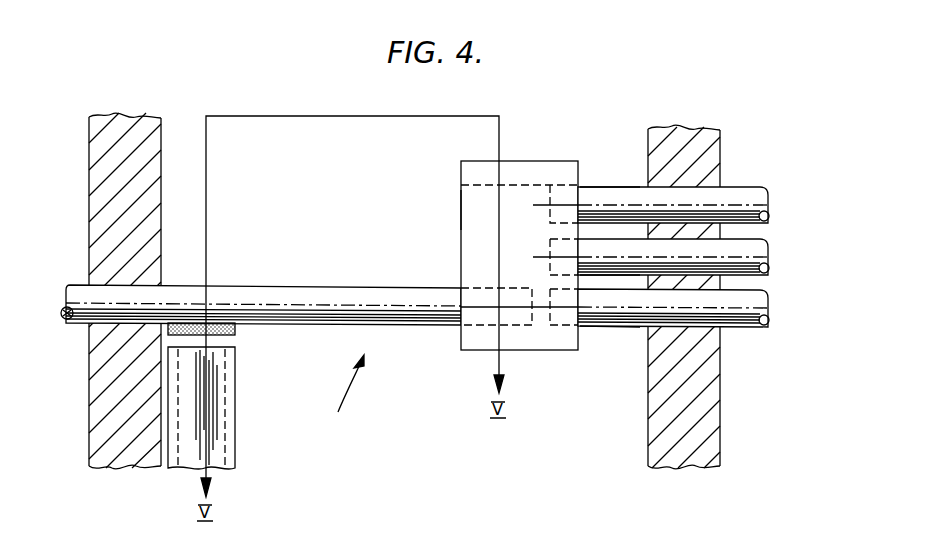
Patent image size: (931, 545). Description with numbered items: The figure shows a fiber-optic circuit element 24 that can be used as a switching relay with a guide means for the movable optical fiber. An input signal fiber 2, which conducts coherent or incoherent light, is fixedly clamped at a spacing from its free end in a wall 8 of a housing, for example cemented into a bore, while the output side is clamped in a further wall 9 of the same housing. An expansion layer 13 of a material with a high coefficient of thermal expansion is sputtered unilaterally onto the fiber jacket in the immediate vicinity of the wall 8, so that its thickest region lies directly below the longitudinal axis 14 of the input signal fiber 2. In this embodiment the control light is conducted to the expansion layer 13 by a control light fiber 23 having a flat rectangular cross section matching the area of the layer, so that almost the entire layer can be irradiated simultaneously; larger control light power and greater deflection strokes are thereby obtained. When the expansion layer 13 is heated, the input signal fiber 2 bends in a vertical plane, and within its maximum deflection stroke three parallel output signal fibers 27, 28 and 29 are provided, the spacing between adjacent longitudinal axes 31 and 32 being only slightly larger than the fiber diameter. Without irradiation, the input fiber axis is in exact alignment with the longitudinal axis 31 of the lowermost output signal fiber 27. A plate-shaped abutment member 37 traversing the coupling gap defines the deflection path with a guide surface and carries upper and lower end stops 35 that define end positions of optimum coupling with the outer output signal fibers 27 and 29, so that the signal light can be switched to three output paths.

The input signal fiber 2 is at (375, 290).
The wall 8 is at (150, 159).
The wall 9 is at (655, 140).
The expansion layer 13 is at (236, 333).
The longitudinal axis 14 is at (68, 301).
The control light fiber 23 is at (215, 413).
The circuit element 24 is at (344, 394).
The output signal fiber 27 is at (595, 318).
The output signal fiber 28 is at (605, 265).
The output signal fiber 29 is at (597, 195).
The longitudinal axis 31 is at (766, 308).
The longitudinal axis 32 is at (769, 208).
The end stops 35 is at (525, 172).
The abutment member 37 is at (470, 210).